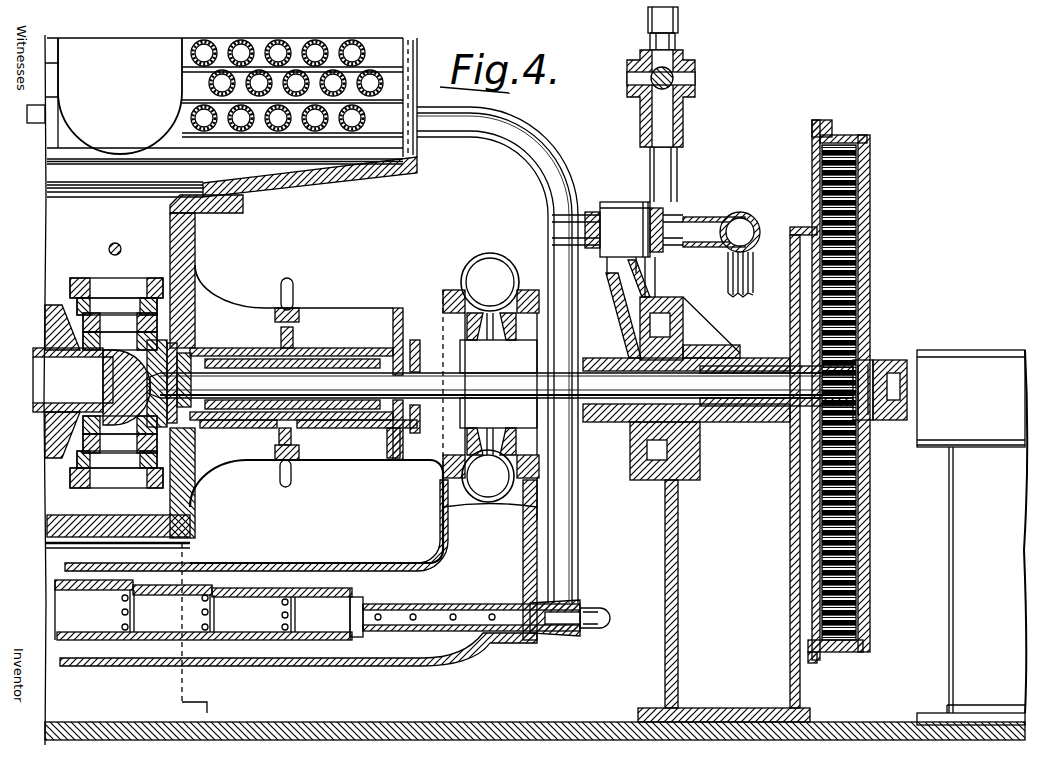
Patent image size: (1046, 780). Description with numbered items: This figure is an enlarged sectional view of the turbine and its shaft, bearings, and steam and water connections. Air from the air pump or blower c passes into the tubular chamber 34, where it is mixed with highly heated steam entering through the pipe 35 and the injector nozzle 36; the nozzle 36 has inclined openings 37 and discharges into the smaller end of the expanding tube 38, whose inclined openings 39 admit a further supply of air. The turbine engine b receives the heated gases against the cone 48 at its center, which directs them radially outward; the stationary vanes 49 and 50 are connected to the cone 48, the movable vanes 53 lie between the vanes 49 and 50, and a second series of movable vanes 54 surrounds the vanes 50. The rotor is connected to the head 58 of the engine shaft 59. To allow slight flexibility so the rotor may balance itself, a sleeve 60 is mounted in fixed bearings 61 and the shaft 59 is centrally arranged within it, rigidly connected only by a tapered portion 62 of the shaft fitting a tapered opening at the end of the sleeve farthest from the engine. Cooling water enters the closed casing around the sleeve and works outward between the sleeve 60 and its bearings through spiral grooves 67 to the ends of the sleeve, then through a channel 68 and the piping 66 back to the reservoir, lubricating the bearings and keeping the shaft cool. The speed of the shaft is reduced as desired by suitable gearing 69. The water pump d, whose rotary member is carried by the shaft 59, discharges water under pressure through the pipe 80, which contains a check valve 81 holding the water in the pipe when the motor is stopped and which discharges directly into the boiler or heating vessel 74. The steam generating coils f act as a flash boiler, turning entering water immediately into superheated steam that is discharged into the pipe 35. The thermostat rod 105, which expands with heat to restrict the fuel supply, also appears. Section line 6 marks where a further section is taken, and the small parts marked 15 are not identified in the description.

The boiler or heating vessel 74 is at (120, 96).
The steam generating coils f is at (290, 85).
The metal rod 105 is at (117, 243).
The check valve 81 is at (688, 62).
The pipe 80 is at (678, 163).
The gearing 69 is at (858, 292).
The turbine engine b is at (108, 289).
The stationary vanes 49 is at (103, 340).
The movable vanes 53 is at (122, 322).
The cone 48 is at (113, 383).
The section line 6 is at (40, 412).
The oil cup 15 is at (286, 385).
The piping 66 is at (292, 483).
The head of the engine shaft 58 is at (202, 350).
The sleeve 60 is at (257, 360).
The engine shaft 59 is at (297, 377).
The fixed bearings 61 is at (213, 425).
The channel 68 is at (262, 420).
The tapered portion of the shaft 62 is at (357, 430).
The spiral grooves 67 is at (378, 440).
The air pump or blower c is at (463, 328).
The water pump d is at (640, 418).
The pipe 35 is at (578, 518).
The inclined openings 39 is at (288, 578).
The expanding tube 38 is at (209, 610).
The inclined openings 37 is at (440, 605).
The injector nozzle 36 is at (402, 620).
The tubular chamber 34 is at (385, 666).
The second series of movable vanes 54 is at (103, 478).
The stationary vanes 50 is at (132, 458).